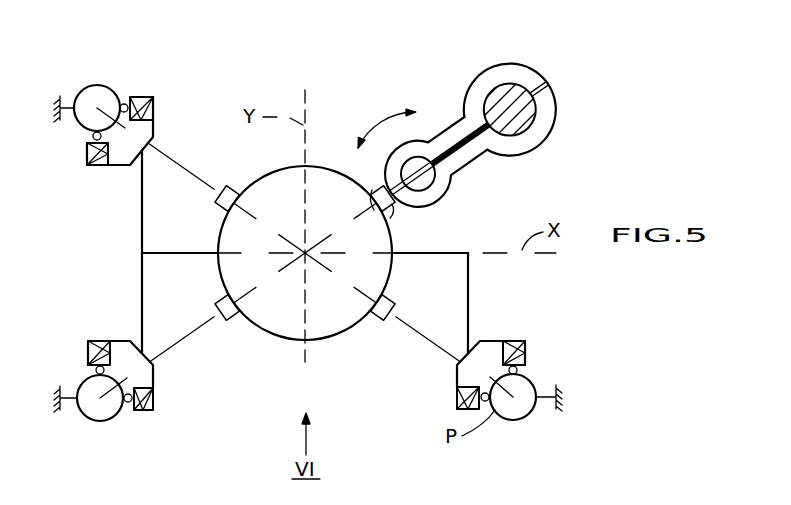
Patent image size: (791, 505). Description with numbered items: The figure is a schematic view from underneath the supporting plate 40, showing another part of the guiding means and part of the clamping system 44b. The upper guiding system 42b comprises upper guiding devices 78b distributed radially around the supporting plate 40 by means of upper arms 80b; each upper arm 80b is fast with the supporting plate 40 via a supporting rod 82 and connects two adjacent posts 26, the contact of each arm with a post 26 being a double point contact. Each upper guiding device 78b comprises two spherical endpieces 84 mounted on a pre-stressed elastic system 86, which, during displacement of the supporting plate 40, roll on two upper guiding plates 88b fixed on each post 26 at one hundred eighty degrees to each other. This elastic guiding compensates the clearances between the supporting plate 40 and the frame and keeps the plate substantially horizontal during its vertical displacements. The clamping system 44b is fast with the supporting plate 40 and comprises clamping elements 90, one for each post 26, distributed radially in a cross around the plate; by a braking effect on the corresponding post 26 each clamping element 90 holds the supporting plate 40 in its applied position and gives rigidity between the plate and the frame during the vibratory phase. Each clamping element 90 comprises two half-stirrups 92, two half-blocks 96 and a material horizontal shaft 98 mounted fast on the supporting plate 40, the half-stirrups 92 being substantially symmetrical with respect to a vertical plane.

The post 26 is at (92, 408).
The supporting plate 40 is at (347, 318).
The upper guiding system 42b is at (135, 85).
The clamping system 44b is at (574, 94).
The upper guiding device 78b is at (116, 82).
The upper arm 80b is at (142, 298).
The supporting rod 82 is at (178, 253).
The spherical endpiece 84 is at (131, 404).
The pre-stressed elastic system 86 is at (508, 341).
The upper guiding plate 88b is at (90, 137).
The clamping element 90 is at (555, 67).
The half-stirrup 92 is at (515, 73).
The half-block 96 is at (418, 158).
The horizontal shaft 98 is at (380, 187).